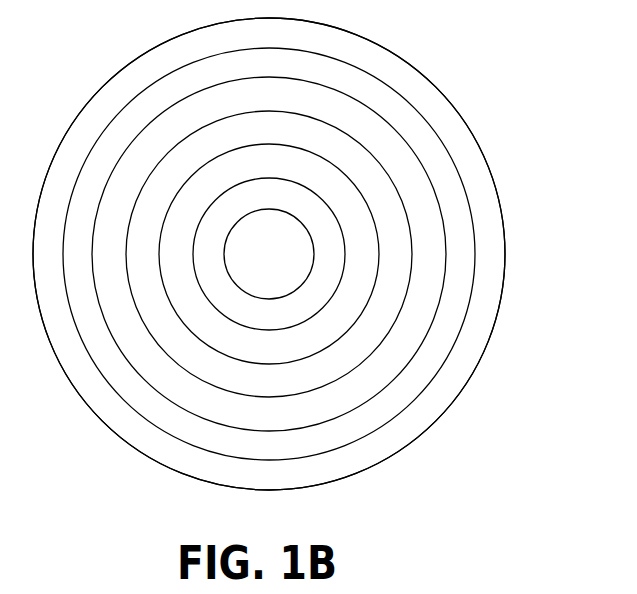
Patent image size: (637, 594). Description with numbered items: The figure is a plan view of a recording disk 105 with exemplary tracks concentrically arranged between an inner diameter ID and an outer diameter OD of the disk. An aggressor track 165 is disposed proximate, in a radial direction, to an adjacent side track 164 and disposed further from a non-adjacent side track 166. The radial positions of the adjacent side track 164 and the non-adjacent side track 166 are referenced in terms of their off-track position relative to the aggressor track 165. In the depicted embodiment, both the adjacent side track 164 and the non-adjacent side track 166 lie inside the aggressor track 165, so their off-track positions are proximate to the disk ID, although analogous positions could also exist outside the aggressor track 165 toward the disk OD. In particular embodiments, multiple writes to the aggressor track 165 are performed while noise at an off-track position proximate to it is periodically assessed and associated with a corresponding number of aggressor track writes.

The recording disk 105 is at (503, 106).
The outer diameter OD is at (503, 257).
The inner diameter ID is at (228, 276).
The adjacent side track 164 is at (283, 398).
The aggressor track 165 is at (393, 379).
The non-adjacent side track 166 is at (282, 363).